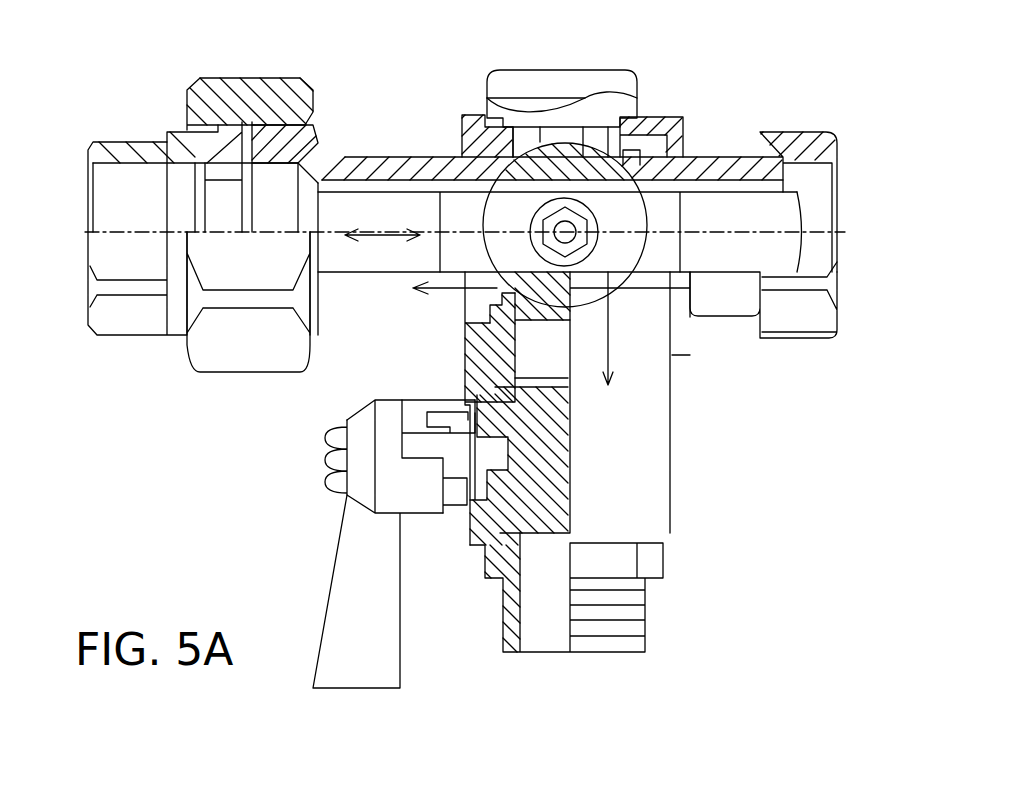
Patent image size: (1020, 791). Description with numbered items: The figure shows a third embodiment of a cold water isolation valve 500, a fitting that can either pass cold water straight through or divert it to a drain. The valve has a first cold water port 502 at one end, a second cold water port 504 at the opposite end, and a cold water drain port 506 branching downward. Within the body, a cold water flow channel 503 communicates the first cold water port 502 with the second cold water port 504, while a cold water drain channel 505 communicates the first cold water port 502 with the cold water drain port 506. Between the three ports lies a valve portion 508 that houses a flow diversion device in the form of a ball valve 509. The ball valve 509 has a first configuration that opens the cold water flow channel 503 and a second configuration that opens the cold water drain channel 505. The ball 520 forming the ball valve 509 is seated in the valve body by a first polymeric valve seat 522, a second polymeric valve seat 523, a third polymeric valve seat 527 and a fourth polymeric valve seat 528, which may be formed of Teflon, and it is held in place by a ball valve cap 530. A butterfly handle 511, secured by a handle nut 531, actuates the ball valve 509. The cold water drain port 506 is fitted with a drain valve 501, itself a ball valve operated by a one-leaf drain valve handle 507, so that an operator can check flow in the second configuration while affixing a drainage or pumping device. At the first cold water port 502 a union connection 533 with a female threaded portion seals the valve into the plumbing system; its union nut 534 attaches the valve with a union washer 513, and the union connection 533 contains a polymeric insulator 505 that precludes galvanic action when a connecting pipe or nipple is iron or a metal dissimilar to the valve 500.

The cold water isolation valve 500 is at (847, 380).
The drain valve 501 is at (566, 441).
The first cold water port 502 is at (88, 233).
The cold water flow channel 503 is at (421, 270).
The second cold water port 504 is at (837, 232).
The cold water drain channel 505 is at (213, 112).
The cold water drain port 506 is at (600, 655).
The drain valve handle 507 is at (345, 577).
The valve portion 508 is at (462, 122).
The ball valve 509 is at (586, 127).
The butterfly handle 511 is at (800, 192).
The union washer 513 is at (300, 158).
The ball 520 is at (547, 127).
The first polymeric valve seat 522 is at (620, 125).
The second polymeric valve seat 523 is at (500, 318).
The third polymeric valve seat 527 is at (490, 156).
The fourth polymeric valve seat 528 is at (640, 150).
The ball valve cap 530 is at (633, 72).
The handle nut 531 is at (592, 237).
The union connection 533 is at (122, 338).
The union nut 534 is at (263, 77).